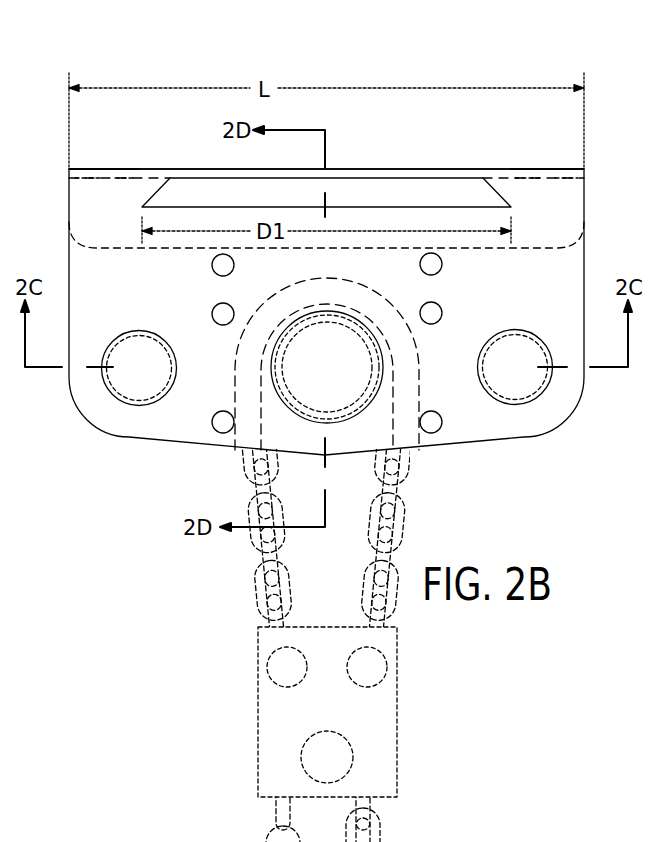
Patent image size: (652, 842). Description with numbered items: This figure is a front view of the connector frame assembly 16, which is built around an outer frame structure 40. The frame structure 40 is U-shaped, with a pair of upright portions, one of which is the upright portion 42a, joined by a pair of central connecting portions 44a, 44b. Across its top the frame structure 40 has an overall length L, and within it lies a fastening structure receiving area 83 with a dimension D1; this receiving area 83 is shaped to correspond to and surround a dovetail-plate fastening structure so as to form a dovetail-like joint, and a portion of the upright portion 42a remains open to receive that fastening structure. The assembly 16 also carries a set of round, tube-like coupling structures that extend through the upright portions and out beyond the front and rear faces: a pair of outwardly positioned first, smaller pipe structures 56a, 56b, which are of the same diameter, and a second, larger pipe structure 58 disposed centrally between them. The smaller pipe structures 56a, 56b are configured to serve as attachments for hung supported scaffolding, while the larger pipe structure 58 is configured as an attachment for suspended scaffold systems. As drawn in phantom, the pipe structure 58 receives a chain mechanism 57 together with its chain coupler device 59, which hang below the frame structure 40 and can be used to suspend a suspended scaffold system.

The connector frame assembly 16 is at (456, 132).
The outer frame structure 40 is at (349, 276).
The upright portion 42a is at (568, 412).
The central connecting portion 44a is at (92, 169).
The central connecting portion 44b is at (560, 169).
The first smaller pipe structure 56a is at (140, 405).
The first smaller pipe structure 56b is at (515, 405).
The second larger pipe structure 58 is at (352, 418).
The fastening structure receiving area 83 is at (373, 186).
The chain mechanism 57 is at (258, 593).
The chain coupler device 59 is at (258, 710).